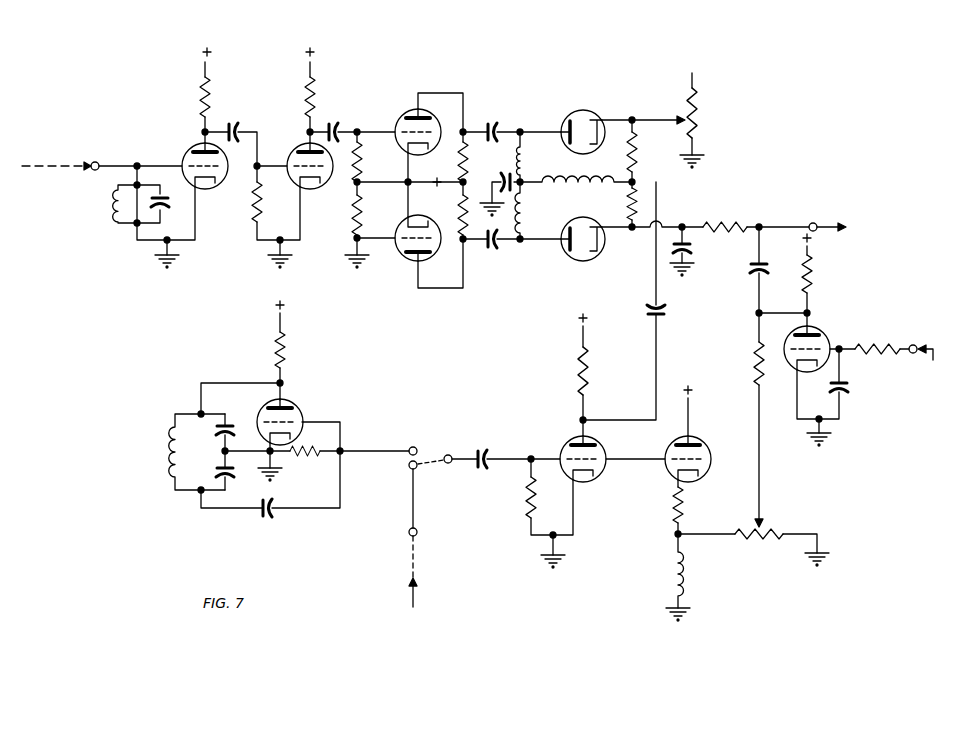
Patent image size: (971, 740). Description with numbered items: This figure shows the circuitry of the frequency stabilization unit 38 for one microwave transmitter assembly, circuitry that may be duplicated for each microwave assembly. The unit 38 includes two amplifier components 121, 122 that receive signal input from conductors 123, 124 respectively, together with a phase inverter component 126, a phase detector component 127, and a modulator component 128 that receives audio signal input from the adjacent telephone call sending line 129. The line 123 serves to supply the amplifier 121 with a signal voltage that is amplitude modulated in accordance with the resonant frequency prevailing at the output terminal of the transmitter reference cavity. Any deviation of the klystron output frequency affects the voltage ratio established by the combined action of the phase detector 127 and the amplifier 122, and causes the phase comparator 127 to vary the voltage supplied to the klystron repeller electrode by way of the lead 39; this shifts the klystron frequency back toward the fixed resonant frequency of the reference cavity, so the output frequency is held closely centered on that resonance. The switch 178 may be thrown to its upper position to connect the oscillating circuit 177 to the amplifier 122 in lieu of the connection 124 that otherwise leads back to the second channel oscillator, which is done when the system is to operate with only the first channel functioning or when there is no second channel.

The unit 38 is at (453, 50).
The amplifier component 121 is at (261, 108).
The conductor 123 is at (53, 163).
The phase inverter component 126 is at (414, 214).
The phase detector component 127 is at (598, 100).
The lead 39 is at (787, 222).
The modulator component 128 is at (821, 330).
The telephone call sending line 129 is at (927, 362).
The amplifier component 122 is at (653, 447).
The oscillating circuit 177 is at (249, 407).
The switch 178 is at (433, 461).
The conductor 124 is at (417, 555).